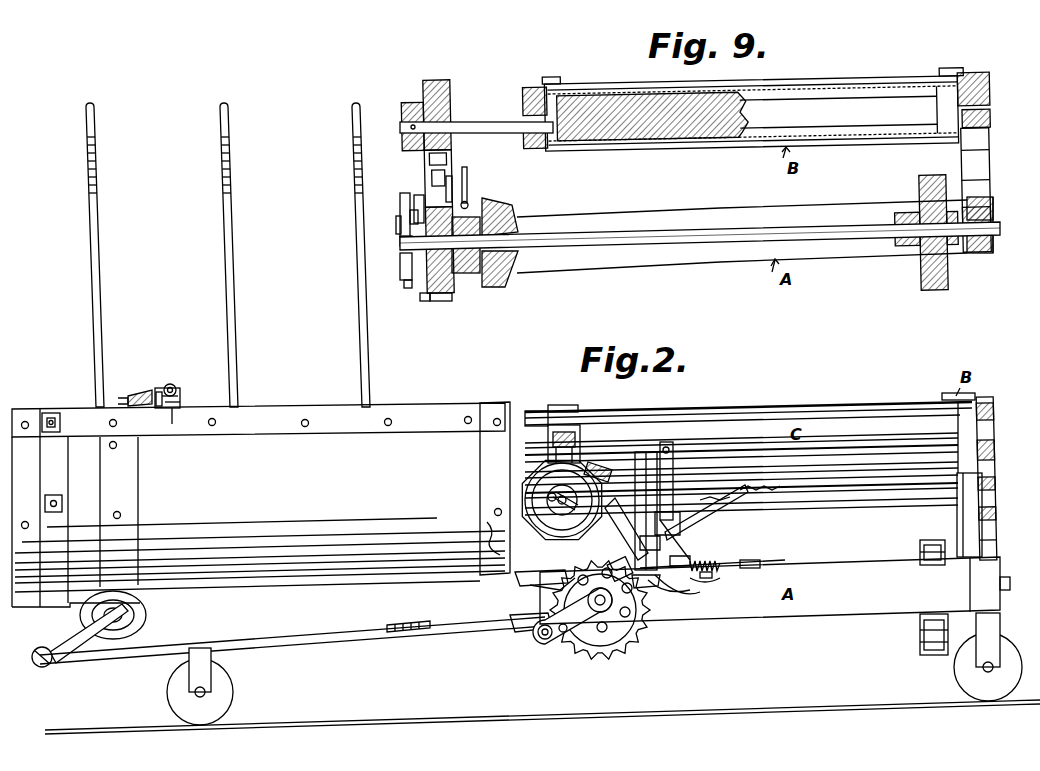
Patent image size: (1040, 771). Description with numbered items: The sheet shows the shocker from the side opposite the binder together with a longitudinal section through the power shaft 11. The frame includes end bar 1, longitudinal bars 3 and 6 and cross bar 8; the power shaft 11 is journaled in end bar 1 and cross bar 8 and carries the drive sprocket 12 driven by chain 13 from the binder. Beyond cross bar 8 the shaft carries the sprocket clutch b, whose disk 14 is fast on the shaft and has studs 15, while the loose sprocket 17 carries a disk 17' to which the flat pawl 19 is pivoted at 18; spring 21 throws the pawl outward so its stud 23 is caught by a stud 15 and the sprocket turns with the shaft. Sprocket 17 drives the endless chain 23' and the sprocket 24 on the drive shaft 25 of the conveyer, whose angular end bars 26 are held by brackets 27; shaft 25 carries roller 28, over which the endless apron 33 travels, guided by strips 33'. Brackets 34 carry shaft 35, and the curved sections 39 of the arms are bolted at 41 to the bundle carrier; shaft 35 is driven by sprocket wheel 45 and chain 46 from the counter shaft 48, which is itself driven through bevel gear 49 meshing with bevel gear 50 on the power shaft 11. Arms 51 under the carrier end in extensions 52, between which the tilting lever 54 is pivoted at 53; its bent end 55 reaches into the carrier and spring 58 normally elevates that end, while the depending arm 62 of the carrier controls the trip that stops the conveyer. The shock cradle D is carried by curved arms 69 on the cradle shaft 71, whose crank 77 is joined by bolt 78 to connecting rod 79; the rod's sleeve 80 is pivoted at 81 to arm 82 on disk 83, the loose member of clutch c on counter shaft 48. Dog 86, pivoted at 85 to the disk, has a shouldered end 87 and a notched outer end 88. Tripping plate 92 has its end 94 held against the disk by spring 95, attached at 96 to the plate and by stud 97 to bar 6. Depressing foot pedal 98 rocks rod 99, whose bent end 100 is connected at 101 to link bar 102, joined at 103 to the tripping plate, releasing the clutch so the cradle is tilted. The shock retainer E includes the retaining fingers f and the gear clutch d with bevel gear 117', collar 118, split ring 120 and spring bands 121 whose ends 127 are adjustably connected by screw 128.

In FIG. 9, the end bar 1 is at (983, 256).
In FIG. 2, the end bar 1 is at (990, 577).
In FIG. 9, the longitudinal bar 3 is at (712, 262).
In FIG. 2, the longitudinal bar 6 is at (720, 620).
In FIG. 9, the cross bar 8 is at (471, 274).
In FIG. 9, the power shaft 11 is at (698, 232).
In FIG. 2, the power shaft 11 is at (1005, 588).
In FIG. 9, the drive sprocket 12 is at (920, 190).
In FIG. 2, the drive sprocket 12 is at (956, 524).
In FIG. 9, the chain 13 is at (922, 278).
In FIG. 2, the chain 13 is at (918, 640).
In FIG. 9, the disk 14 is at (402, 264).
In FIG. 9, the stud 15 is at (400, 220).
In FIG. 9, the sprocket 17 is at (443, 307).
In FIG. 9, the disk 17' is at (408, 195).
In FIG. 9, the pivot 18 is at (402, 242).
In FIG. 9, the flat pawl 19 is at (402, 196).
In FIG. 9, the spring 21 is at (424, 300).
In FIG. 9, the stud 23 is at (392, 211).
In FIG. 9, the endless chain 23' is at (467, 176).
In FIG. 9, the sprocket 24 is at (452, 90).
In FIG. 9, the drive shaft 25 is at (470, 124).
In FIG. 9, the angular end bar 26 is at (538, 148).
In FIG. 2, the angular end bar 26 is at (992, 420).
In FIG. 9, the bracket 27 is at (992, 174).
In FIG. 2, the bracket 27 is at (986, 528).
In FIG. 9, the roller 28 is at (657, 140).
In FIG. 9, the endless apron 33 is at (773, 113).
In FIG. 2, the endless apron 33 is at (748, 460).
In FIG. 9, the strip 33' is at (761, 62).
In FIG. 2, the strip 33' is at (761, 391).
In FIG. 2, the bracket 34 is at (540, 588).
In FIG. 2, the shaft 35 is at (561, 499).
In FIG. 2, the curved arm section 39 is at (548, 444).
In FIG. 2, the bolt 41 is at (578, 416).
In FIG. 2, the sprocket wheel 45 is at (612, 498).
In FIG. 2, the endless chain 46 is at (590, 462).
In FIG. 2, the counter shaft 48 is at (596, 601).
In FIG. 2, the bevel gear 49 is at (600, 631).
In FIG. 9, the bevel gear 50 is at (505, 276).
In FIG. 2, the bevel gear 50 is at (542, 640).
In FIG. 2, the arm 51 is at (674, 456).
In FIG. 2, the vertical parallel extension 52 is at (676, 520).
In FIG. 2, the pivot 53 is at (678, 540).
In FIG. 2, the tilting lever 54 is at (712, 496).
In FIG. 2, the angular portion 55 is at (752, 488).
In FIG. 2, the spring 58 is at (657, 539).
In FIG. 2, the depending arm 62 is at (640, 470).
In FIG. 2, the curved arm 69 is at (130, 487).
In FIG. 2, the cradle shaft 71 is at (136, 613).
In FIG. 2, the crank 77 is at (74, 630).
In FIG. 2, the bolt 78 is at (44, 668).
In FIG. 2, the connecting rod 79 is at (300, 632).
In FIG. 2, the sleeve 80 is at (470, 628).
In FIG. 2, the pivot connection 81 is at (528, 632).
In FIG. 2, the arm 82 is at (567, 641).
In FIG. 2, the disk 83 is at (596, 650).
In FIG. 2, the pivot 85 is at (650, 590).
In FIG. 2, the dog 86 is at (677, 591).
In FIG. 2, the shouldered end 87 is at (672, 554).
In FIG. 2, the notch 88 is at (669, 585).
In FIG. 2, the tripping plate 92 is at (717, 583).
In FIG. 2, the end 94 is at (706, 591).
In FIG. 2, the spring 95 is at (712, 562).
In FIG. 2, the connection 96 is at (690, 562).
In FIG. 2, the stud 97 is at (752, 553).
In FIG. 9, the foot pedal 98 is at (468, 176).
In FIG. 2, the foot pedal 98 is at (487, 522).
In FIG. 9, the rocking rod 99 is at (470, 200).
In FIG. 2, the laterally bent end 100 is at (520, 580).
In FIG. 2, the connection 101 is at (552, 510).
In FIG. 2, the link bar 102 is at (573, 512).
In FIG. 2, the connection 103 is at (610, 570).
In FIG. 2, the bevel gear 117' is at (142, 385).
In FIG. 2, the collar 118 is at (160, 392).
In FIG. 2, the split washer 120 is at (178, 385).
In FIG. 2, the spring band 121 is at (172, 412).
In FIG. 2, the parallel end 127 is at (183, 398).
In FIG. 2, the screw 128 is at (182, 392).
In FIG. 9, the sprocket clutch b is at (406, 286).
In FIG. 2, the two-part clutch c is at (618, 655).
In FIG. 2, the gear clutch d is at (118, 401).
In FIG. 2, the retaining finger f is at (104, 340).
In FIG. 2, the shock cradle D is at (261, 504).
In FIG. 2, the shock retainer E is at (162, 378).